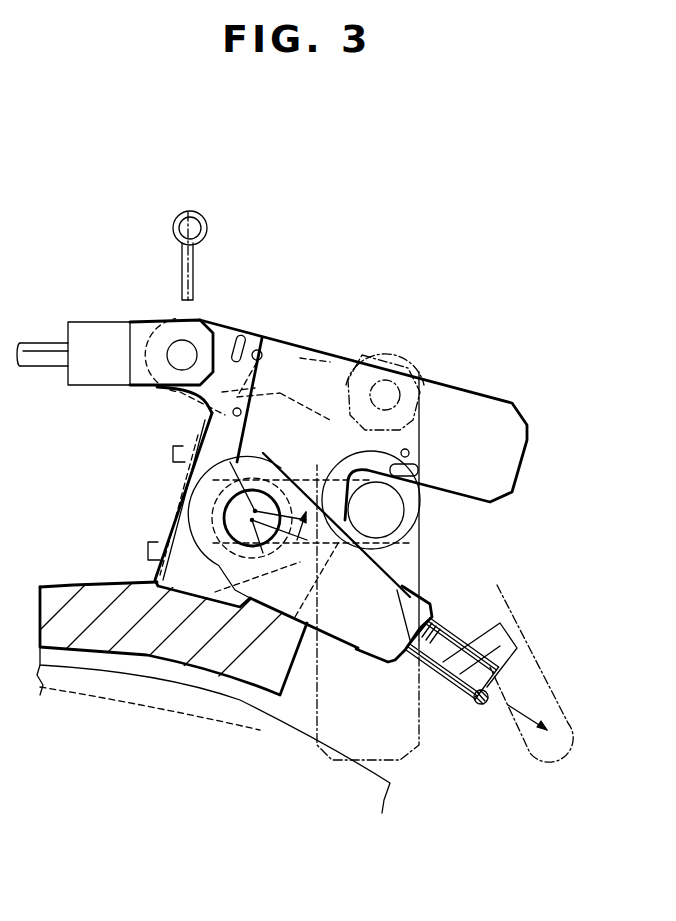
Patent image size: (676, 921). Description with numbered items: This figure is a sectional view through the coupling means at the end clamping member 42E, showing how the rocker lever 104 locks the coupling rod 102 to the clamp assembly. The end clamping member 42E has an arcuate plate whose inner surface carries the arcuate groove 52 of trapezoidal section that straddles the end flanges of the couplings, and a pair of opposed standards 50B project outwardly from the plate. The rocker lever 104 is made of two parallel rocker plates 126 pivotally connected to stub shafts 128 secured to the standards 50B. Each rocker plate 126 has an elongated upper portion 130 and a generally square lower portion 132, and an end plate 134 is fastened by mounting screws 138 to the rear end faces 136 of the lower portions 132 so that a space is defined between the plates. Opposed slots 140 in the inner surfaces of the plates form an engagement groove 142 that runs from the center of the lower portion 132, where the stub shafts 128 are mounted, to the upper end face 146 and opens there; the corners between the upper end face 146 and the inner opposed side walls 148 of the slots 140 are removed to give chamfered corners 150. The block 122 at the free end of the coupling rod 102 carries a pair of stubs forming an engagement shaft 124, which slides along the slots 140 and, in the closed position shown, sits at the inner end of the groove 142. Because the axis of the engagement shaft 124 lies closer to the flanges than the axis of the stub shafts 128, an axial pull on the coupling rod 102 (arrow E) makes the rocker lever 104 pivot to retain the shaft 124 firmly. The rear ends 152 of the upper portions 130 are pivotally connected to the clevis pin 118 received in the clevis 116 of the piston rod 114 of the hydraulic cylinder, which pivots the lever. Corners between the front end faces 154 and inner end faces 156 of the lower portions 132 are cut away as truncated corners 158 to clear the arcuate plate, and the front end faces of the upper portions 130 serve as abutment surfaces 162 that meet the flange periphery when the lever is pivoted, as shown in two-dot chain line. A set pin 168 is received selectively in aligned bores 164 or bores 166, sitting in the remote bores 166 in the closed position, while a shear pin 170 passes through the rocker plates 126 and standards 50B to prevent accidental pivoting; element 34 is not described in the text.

The piston rod 114 is at (38, 345).
The rear ends 152 is at (181, 317).
The clevis 116 is at (178, 317).
The rocker lever 104 is at (465, 378).
The rocker plates 126 is at (490, 393).
The clevis pin 118 is at (184, 352).
The bores 164 is at (258, 349).
The set pin 168 is at (192, 250).
The chamfered corners 150 is at (264, 352).
The engagement groove 142 is at (298, 390).
The slots 140 is at (410, 600).
The inner opposed side walls 148 is at (363, 457).
The upper end face 146 is at (393, 385).
The upper portion 130 is at (428, 393).
The abutment surfaces 162 is at (517, 455).
The shear pin 170 is at (254, 420).
The bores 166 is at (176, 410).
The standards 50B is at (205, 427).
The stub shafts 128 is at (263, 463).
The mounting screws 138 is at (174, 452).
The rear end faces 136 is at (184, 470).
The end plate 134 is at (181, 497).
The lower portion 132 is at (191, 545).
The engagement shaft 124 is at (236, 528).
The front end faces 154 is at (384, 540).
The end clamping member 42E is at (106, 598).
The arcuate groove 52 is at (147, 656).
The ring lower edge 34 is at (390, 775).
The inner end faces 156 is at (220, 622).
The truncated corners 158 is at (416, 645).
The block 122 is at (402, 588).
The coupling rod 102 is at (490, 667).